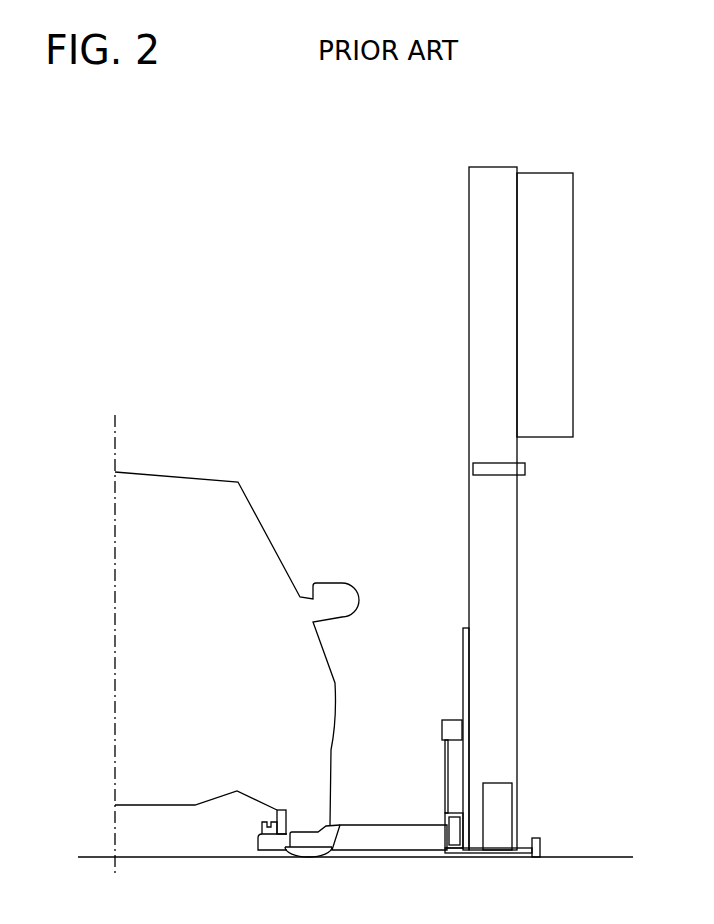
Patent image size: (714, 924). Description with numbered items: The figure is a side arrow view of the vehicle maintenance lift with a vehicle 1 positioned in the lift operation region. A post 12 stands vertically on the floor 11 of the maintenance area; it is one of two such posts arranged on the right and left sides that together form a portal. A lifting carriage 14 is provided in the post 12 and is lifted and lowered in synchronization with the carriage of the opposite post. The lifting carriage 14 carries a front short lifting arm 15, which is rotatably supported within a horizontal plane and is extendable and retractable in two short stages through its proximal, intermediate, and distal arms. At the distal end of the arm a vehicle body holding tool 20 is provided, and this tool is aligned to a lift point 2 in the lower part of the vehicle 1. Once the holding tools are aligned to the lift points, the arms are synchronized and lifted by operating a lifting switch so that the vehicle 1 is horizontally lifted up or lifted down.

The vehicle 1 is at (255, 512).
The lift point 2 is at (274, 813).
The vehicle body holding tool 20 is at (260, 827).
The floor 11 is at (605, 856).
The post 12 is at (507, 528).
The lifting carriage 14 is at (450, 753).
The front short lifting arm 15 is at (388, 826).